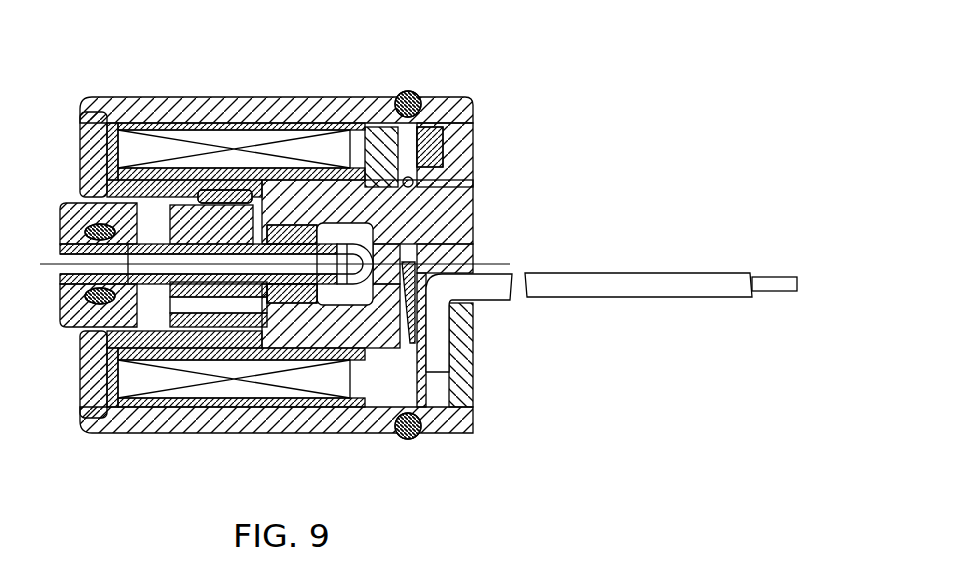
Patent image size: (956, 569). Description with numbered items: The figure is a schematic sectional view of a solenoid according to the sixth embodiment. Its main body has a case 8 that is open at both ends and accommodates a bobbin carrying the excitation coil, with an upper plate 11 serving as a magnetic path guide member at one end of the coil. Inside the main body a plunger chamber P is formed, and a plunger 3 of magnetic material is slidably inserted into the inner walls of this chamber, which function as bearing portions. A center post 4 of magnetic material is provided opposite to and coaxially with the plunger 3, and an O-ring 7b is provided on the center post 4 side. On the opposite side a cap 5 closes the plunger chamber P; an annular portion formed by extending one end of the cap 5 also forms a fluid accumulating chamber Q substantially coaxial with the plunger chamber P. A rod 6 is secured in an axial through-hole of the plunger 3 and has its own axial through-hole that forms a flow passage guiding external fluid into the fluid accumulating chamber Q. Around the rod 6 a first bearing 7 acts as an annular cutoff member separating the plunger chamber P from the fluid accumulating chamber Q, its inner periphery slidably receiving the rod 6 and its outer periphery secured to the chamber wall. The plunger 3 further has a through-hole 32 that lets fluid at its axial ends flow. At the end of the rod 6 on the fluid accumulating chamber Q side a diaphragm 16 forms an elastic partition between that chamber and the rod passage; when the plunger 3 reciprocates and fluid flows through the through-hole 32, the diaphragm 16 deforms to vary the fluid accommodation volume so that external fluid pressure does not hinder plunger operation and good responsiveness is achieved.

The case 8 is at (176, 100).
The plunger 3 is at (249, 211).
The upper plate 11 is at (80, 129).
The center post 4 is at (62, 216).
The rod 6 is at (62, 267).
The O-ring 7b is at (62, 290).
The cap 5 is at (474, 215).
The diaphragm 16 is at (452, 302).
The through-hole 32 is at (197, 304).
The plunger chamber P is at (266, 294).
The first bearing 7 is at (297, 296).
The fluid accumulating chamber Q is at (353, 291).